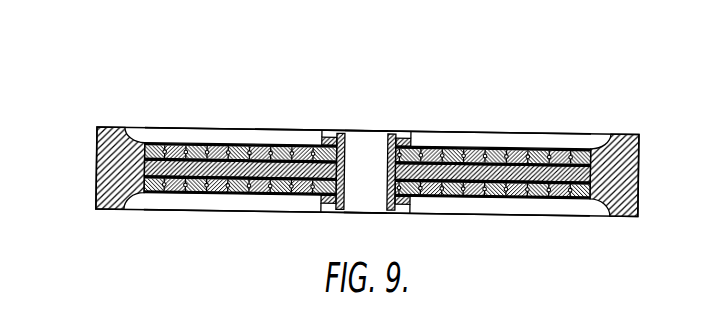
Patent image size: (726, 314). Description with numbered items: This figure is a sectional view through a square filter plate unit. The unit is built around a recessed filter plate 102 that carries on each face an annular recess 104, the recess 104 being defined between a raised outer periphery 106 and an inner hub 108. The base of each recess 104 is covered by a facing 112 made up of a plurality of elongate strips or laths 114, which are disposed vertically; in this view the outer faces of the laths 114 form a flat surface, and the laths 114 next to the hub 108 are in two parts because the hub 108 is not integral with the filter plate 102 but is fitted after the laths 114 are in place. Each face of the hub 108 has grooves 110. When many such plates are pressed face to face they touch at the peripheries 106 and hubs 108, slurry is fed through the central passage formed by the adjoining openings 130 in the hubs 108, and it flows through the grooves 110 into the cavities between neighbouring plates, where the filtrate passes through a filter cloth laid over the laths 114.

The recessed filter plate 102 is at (97, 158).
The annular recess 104 is at (208, 133).
The raised outer periphery 106 is at (113, 126).
The inner hub 108 is at (389, 133).
The grooves 110 is at (338, 139).
The facing 112 is at (522, 148).
The laths 114 is at (494, 146).
The openings 130 is at (388, 187).